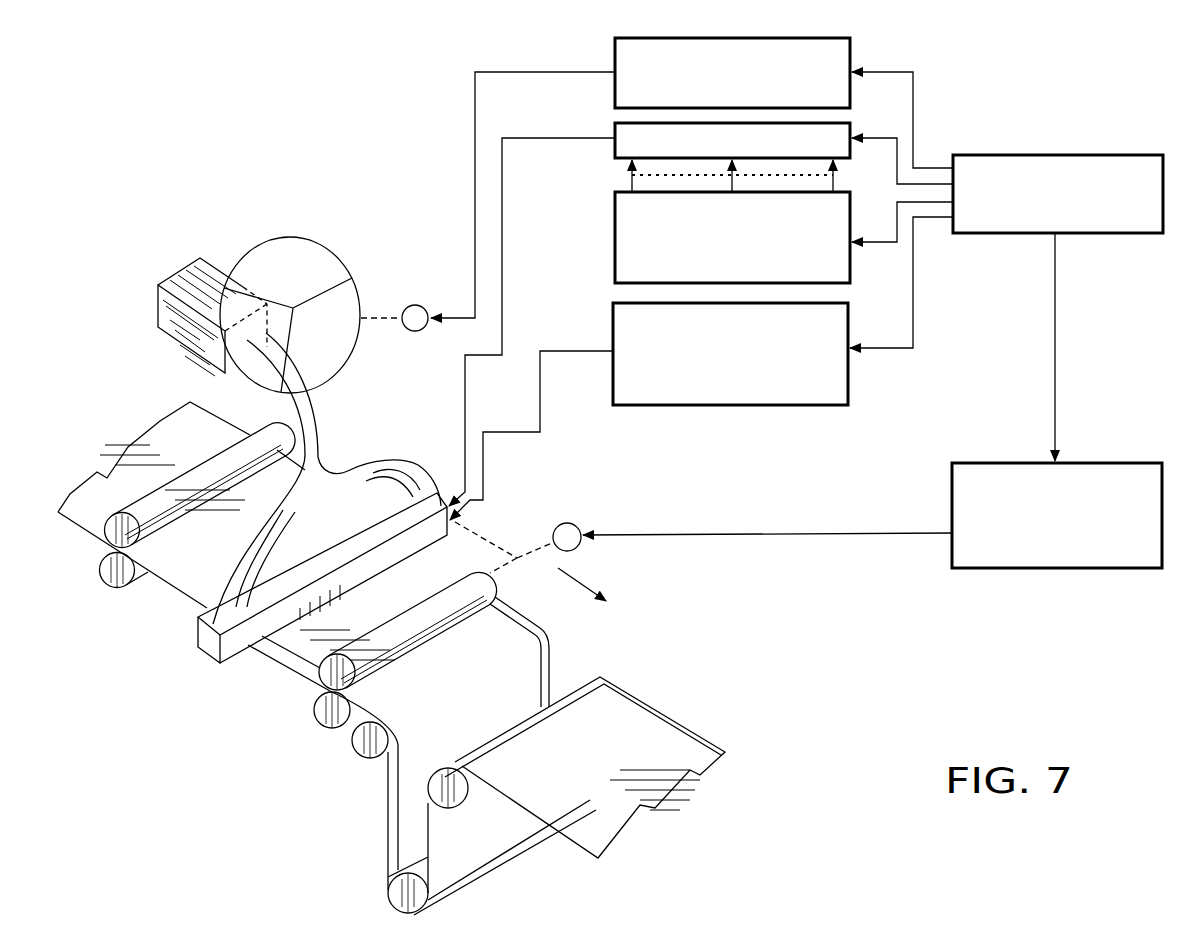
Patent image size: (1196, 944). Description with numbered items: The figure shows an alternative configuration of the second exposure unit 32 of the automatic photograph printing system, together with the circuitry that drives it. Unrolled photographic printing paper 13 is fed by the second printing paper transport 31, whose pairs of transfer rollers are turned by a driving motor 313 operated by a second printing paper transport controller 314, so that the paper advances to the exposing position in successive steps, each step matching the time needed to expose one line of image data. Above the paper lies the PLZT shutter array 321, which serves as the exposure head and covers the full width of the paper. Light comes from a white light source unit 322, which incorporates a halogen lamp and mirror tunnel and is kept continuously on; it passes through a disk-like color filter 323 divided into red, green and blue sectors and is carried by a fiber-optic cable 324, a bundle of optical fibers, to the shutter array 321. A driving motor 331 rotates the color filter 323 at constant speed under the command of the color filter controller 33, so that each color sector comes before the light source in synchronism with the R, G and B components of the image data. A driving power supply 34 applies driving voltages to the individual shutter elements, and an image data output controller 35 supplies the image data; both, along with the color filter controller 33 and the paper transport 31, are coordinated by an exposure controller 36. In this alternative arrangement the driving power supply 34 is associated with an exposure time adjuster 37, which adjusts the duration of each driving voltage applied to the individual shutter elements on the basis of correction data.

The photographic printing paper 13 is at (613, 676).
The second printing paper transport 31 is at (518, 535).
The driving motor 313 is at (581, 547).
The second printing paper transport controller 314 is at (968, 570).
The second exposure unit 32 is at (313, 222).
The PLZT shutter array 321 is at (197, 648).
The white light source unit 322 is at (199, 258).
The disk-like color filter 323 is at (334, 251).
The fiber-optic cable 324 is at (311, 418).
The driving motor 331 is at (414, 305).
The color filter controller 33 is at (615, 56).
The driving power supply 34 is at (615, 130).
The image data output controller 35 is at (613, 328).
The exposure controller 36 is at (1018, 155).
The exposure time adjuster 37 is at (615, 214).